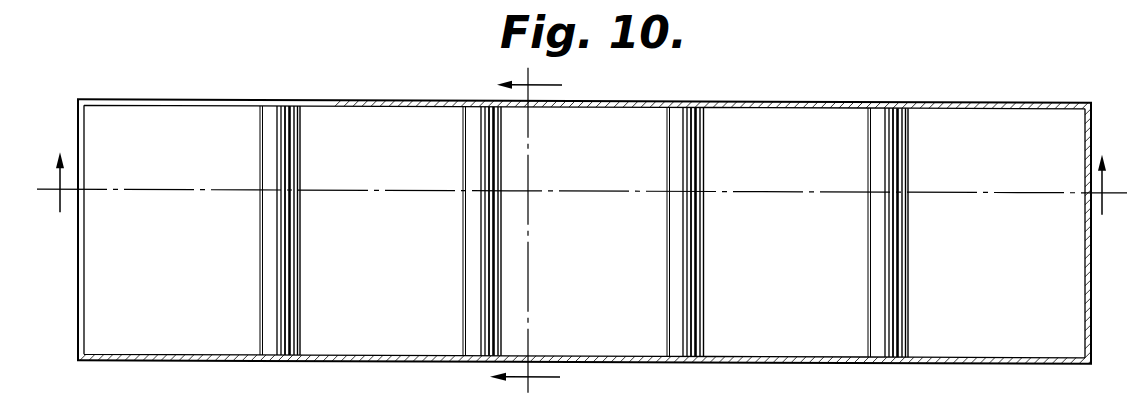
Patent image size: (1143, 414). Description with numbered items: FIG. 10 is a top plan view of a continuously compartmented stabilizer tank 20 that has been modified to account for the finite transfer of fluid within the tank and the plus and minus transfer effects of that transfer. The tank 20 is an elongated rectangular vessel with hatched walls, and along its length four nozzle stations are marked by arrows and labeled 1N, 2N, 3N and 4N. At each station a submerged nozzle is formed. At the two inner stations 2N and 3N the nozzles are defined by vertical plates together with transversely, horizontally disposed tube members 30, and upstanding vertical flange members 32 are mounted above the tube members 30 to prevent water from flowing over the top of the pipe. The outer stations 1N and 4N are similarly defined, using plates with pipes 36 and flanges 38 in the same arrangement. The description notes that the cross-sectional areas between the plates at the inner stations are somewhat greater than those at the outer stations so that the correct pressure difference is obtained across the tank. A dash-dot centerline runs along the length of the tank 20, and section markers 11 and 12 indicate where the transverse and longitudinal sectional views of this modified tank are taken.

The stabilizer tank 20 is at (203, 95).
The outer station 1N is at (280, 94).
The station 2N is at (482, 94).
The station 3N is at (684, 94).
The outer station 4N is at (885, 94).
The tube member 30 is at (462, 228).
The upstanding vertical flange member 32 is at (482, 288).
The pipe 36 is at (259, 219).
The flange 38 is at (279, 275).
The section line 11- 11 is at (578, 186).
The section line 12- 12 is at (530, 234).